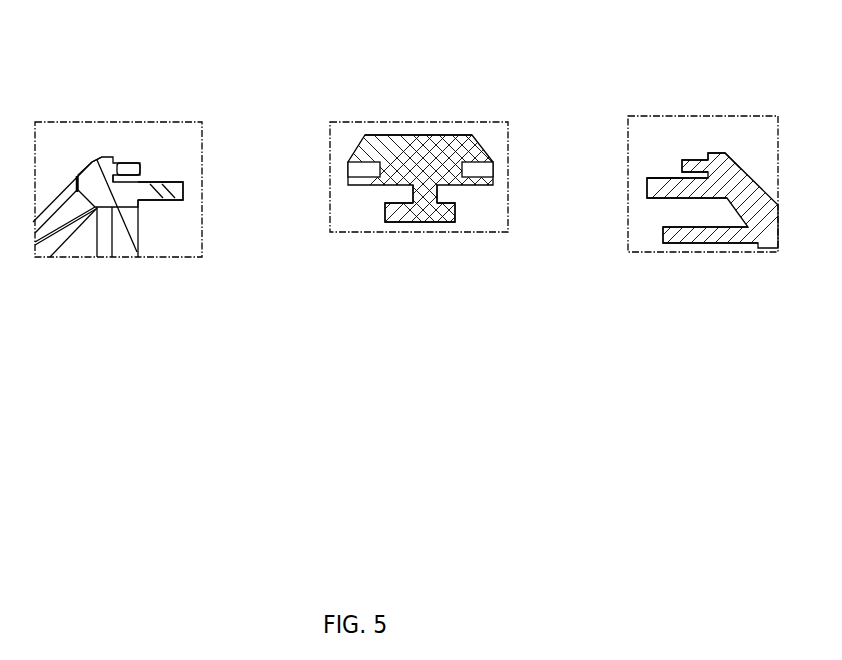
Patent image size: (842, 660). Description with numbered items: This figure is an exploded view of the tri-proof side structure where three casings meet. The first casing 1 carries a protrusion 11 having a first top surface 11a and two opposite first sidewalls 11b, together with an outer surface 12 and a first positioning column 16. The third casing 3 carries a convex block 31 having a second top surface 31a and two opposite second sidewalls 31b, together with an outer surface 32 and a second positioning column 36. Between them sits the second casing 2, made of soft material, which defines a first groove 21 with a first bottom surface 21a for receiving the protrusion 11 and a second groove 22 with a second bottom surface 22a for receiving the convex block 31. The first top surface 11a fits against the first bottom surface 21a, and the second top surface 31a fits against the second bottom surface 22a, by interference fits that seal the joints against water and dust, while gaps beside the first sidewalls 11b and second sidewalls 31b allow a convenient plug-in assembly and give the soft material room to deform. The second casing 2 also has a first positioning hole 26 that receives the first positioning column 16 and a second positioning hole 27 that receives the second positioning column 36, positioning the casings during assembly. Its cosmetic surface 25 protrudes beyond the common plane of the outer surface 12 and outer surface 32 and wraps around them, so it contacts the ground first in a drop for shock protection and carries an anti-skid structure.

The first casing 1 is at (817, 242).
The protrusion 11 is at (795, 197).
The first top surface 11a is at (647, 180).
The first sidewall 11b is at (675, 175).
The outer surface 12 is at (752, 97).
The first positioning column 16 is at (697, 167).
The second casing 2 is at (393, 108).
The first groove 21 is at (507, 250).
The first bottom surface 21a is at (408, 267).
The second groove 22 is at (400, 192).
The second bottom surface 22a is at (417, 202).
The cosmetic surface 25 is at (477, 82).
The first positioning hole 26 is at (525, 102).
The second positioning hole 27 is at (362, 153).
The third casing 3 is at (38, 300).
The convex block 31 is at (240, 250).
The second top surface 31a is at (240, 212).
The second sidewall 31b is at (197, 287).
The outer surface 32 is at (100, 153).
The second positioning column 36 is at (130, 167).